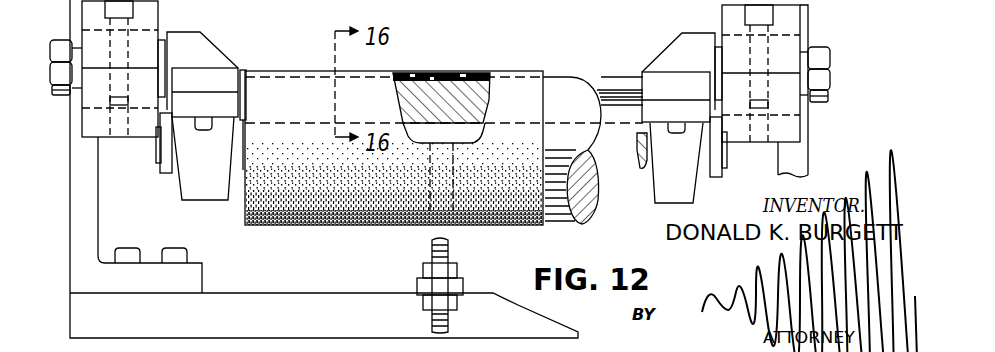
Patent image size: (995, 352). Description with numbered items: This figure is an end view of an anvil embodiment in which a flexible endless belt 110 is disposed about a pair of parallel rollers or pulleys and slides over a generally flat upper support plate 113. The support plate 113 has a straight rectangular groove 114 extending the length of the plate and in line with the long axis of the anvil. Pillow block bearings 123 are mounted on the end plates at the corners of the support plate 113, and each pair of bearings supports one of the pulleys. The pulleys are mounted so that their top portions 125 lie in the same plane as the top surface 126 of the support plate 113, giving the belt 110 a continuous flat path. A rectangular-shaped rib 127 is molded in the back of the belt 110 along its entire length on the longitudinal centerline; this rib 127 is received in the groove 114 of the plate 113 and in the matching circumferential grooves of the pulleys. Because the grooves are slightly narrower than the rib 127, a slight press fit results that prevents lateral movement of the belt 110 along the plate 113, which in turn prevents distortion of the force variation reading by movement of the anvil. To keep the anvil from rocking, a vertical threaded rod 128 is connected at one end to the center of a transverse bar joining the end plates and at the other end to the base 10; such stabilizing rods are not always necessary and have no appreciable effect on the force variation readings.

The base 10 is at (278, 308).
The flexible endless belt 110 is at (422, 72).
The upper support plate 113 is at (486, 100).
The rectangular groove 114 is at (491, 77).
The pillow block bearings 123 is at (663, 188).
The top portions 125 is at (565, 76).
The top surface 126 is at (622, 76).
The rectangular-shaped rib 127 is at (443, 73).
The vertical threaded rod 128 is at (432, 253).